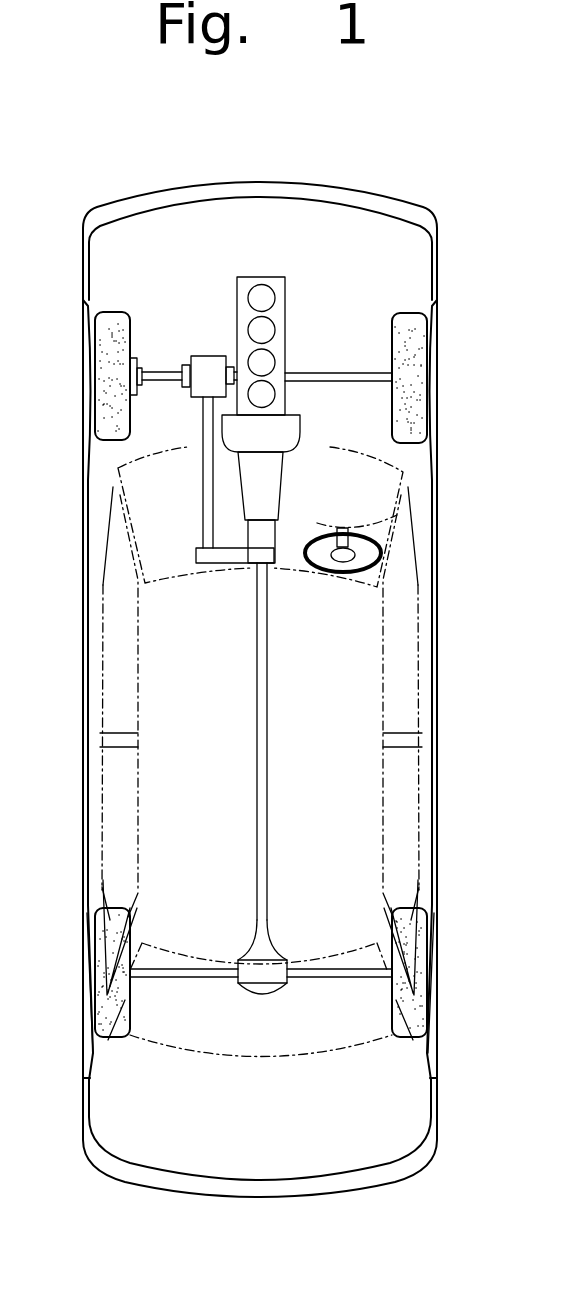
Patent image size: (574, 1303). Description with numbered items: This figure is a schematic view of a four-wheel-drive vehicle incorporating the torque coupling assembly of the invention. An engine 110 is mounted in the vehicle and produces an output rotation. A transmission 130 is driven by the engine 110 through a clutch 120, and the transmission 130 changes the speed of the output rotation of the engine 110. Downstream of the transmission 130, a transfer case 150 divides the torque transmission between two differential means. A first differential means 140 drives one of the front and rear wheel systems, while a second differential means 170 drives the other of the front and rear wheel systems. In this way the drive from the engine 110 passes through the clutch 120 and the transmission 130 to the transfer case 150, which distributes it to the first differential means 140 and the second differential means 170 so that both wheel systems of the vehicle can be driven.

The engine 110 is at (282, 297).
The clutch 120 is at (288, 437).
The transmission 130 is at (270, 492).
The first differential means 140 is at (267, 950).
The transfer case 150 is at (270, 563).
The second differential means 170 is at (207, 362).